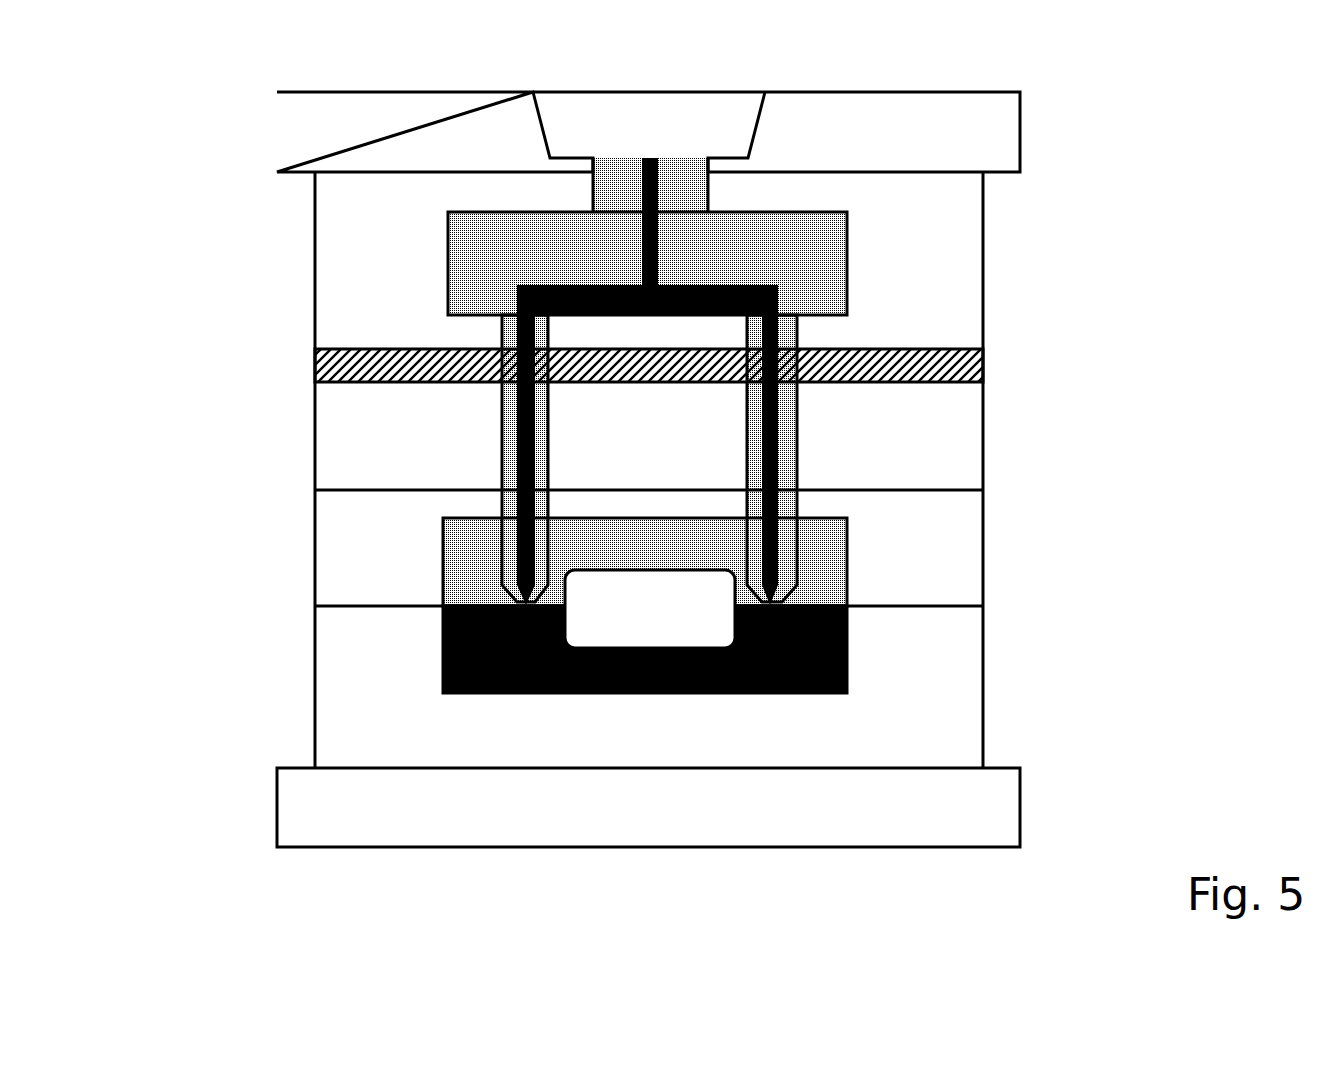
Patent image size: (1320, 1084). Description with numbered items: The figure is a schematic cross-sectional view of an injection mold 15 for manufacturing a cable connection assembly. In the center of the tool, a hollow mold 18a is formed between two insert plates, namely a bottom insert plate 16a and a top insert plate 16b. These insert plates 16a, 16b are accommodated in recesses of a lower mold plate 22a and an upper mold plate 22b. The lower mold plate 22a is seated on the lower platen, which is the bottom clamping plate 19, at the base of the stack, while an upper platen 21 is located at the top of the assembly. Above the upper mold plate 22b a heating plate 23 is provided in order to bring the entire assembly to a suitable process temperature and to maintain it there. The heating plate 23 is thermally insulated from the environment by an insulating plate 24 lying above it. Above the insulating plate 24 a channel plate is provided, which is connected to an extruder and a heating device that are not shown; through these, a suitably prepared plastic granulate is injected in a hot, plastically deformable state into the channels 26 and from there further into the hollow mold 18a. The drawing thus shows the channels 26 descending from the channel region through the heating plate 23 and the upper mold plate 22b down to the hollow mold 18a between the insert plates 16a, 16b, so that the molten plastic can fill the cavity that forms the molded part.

The injection mold 15 is at (155, 93).
The upper platen 21 is at (993, 134).
The insulating plate 24 is at (983, 367).
The heating plate 23 is at (940, 448).
The upper mold plate 22b is at (958, 543).
The lower mold plate 22a is at (952, 693).
The top insert plate of mold tool 16b is at (347, 571).
The bottom insert plate of mold tool 16a is at (732, 680).
The hollow mold 18a is at (613, 608).
The channel 26 is at (500, 440).
The bottom clamping plate 19 is at (993, 812).